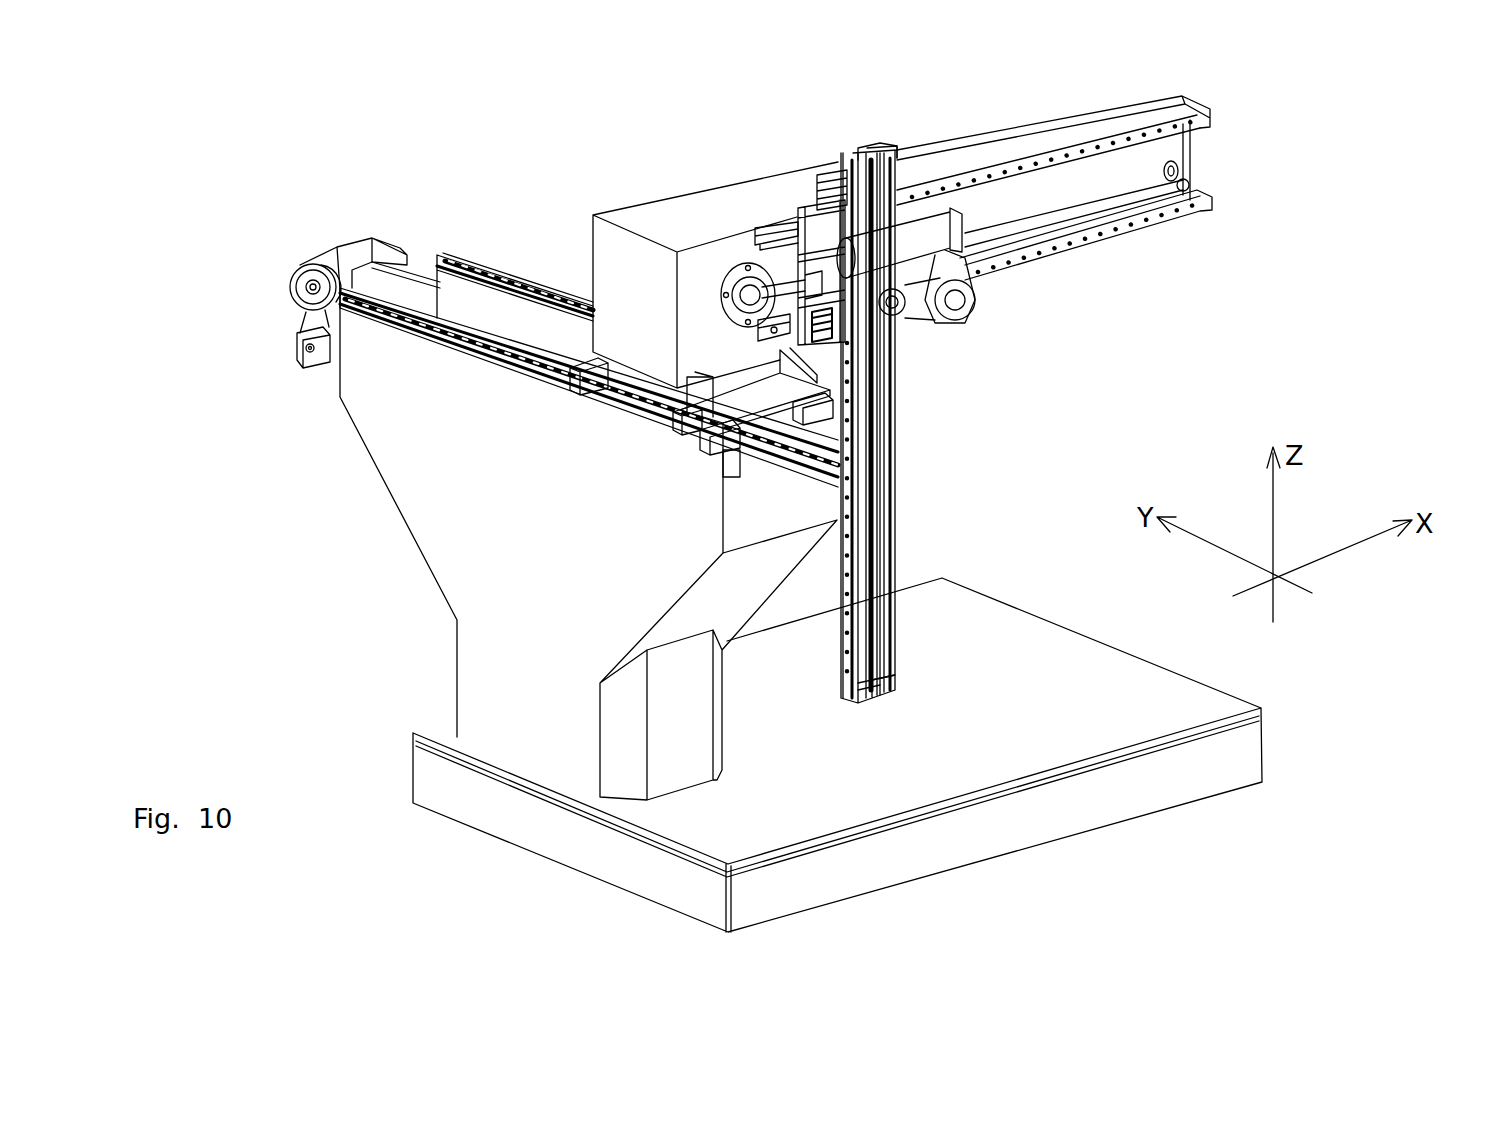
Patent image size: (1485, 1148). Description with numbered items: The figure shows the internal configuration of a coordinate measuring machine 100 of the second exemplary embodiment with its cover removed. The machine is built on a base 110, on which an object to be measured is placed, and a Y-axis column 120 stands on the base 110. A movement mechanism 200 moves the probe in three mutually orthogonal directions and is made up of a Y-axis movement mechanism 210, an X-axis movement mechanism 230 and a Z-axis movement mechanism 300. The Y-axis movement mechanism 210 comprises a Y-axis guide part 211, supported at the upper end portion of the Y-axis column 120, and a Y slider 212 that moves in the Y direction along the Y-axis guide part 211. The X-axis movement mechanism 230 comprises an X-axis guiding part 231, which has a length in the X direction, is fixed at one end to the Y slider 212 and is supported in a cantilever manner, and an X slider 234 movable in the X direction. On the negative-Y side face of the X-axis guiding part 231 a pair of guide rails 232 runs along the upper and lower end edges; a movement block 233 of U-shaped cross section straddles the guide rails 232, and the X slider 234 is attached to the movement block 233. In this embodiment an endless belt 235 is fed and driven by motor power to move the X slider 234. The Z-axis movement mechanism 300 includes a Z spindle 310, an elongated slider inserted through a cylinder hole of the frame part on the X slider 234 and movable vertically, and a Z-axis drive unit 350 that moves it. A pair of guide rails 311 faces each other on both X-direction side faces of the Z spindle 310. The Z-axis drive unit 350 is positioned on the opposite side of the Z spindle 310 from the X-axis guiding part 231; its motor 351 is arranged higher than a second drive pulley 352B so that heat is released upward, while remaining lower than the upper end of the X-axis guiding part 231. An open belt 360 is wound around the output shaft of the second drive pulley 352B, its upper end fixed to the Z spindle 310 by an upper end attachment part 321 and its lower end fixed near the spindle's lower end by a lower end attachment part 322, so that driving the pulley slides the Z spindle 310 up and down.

The coordinate measuring machine 100 is at (577, 143).
The base 110 is at (1088, 655).
The Y-axis column 120 is at (440, 553).
The movement mechanism 200 is at (653, 150).
The Y-axis movement mechanism 210 is at (435, 217).
The Y-axis guide part 211 is at (464, 258).
The Y slider 212 is at (740, 443).
The X-axis movement mechanism 230 is at (985, 125).
The X-axis guiding part 231 is at (1085, 123).
The guide rails 232 is at (1200, 120).
The movement block 233 is at (786, 232).
The X slider 234 is at (808, 337).
The endless belt 235 is at (1138, 205).
The Z-axis movement mechanism 300 is at (1010, 328).
The Z spindle 310 is at (893, 535).
The guide rails 311 is at (848, 597).
The upper end attachment part 321 is at (866, 148).
The lower end attachment part 322 is at (877, 692).
The Z-axis drive unit 350 is at (972, 333).
The motor 351 is at (910, 233).
The second drive pulley 352B is at (947, 320).
The open belt 360 is at (877, 568).